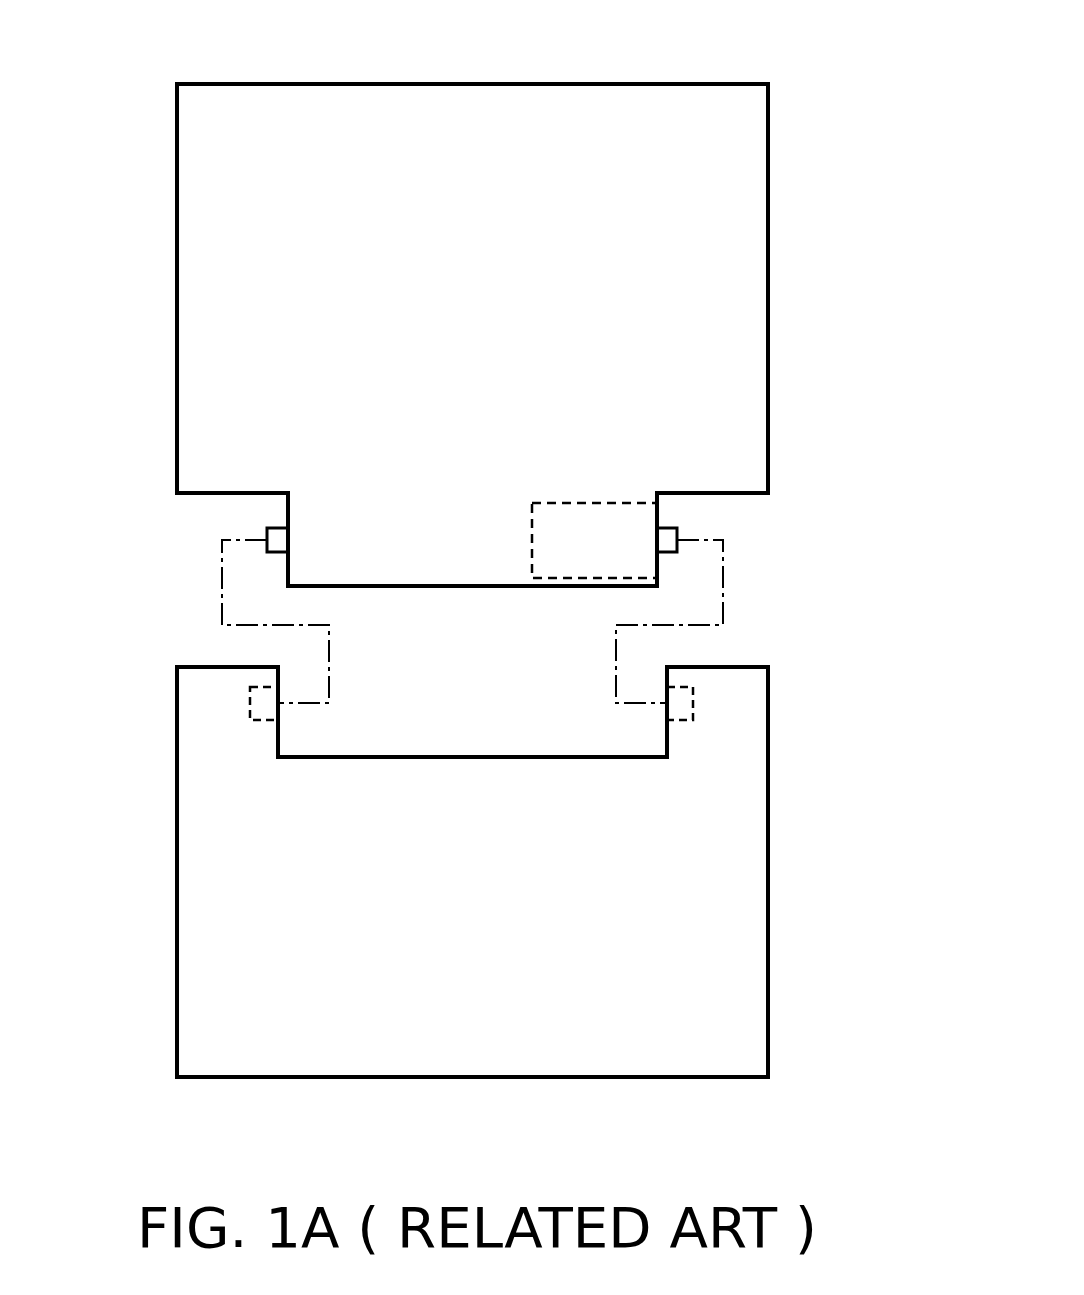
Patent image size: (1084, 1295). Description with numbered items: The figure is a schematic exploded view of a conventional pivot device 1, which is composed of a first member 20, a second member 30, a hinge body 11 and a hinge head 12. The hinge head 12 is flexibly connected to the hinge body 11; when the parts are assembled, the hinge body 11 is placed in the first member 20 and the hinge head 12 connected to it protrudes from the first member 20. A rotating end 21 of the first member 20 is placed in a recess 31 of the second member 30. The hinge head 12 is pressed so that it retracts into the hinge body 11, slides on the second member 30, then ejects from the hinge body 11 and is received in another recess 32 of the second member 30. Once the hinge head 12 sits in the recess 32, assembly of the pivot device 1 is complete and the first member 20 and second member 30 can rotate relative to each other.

The pivot device 1 is at (108, 20).
The first member 20 is at (730, 233).
The hinge body 11 is at (592, 527).
The hinge head 12 is at (677, 533).
The rotating end 21 is at (268, 535).
The second member 30 is at (730, 902).
The recess 31 is at (250, 705).
The recess 32 is at (695, 703).